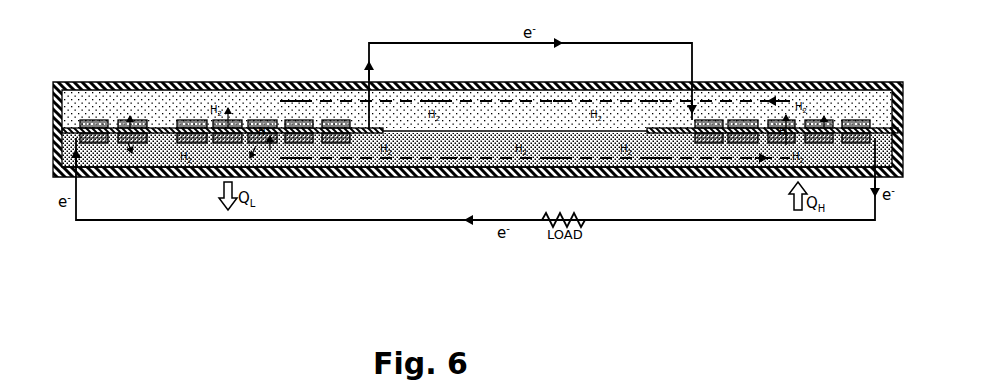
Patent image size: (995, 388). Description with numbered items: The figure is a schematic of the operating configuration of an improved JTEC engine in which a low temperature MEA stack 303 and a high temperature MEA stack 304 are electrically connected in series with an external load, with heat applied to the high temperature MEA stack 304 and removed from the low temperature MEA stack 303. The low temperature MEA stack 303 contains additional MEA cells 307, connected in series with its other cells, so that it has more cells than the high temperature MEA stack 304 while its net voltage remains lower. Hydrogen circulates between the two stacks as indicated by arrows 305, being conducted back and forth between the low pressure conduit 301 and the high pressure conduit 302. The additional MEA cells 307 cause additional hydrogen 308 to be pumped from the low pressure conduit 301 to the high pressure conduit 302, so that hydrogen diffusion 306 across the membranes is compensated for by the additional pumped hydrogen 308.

The low pressure conduit 301 is at (325, 83).
The high pressure conduit 302 is at (700, 168).
The low temperature MEA stack 303 is at (197, 122).
The high temperature MEA stack 304 is at (860, 123).
The arrows indicating hydrogen circulation 305 is at (503, 102).
The hydrogen diffusion 306 is at (824, 118).
The additional MEA cells 307 is at (88, 104).
The additional pumped hydrogen 308 is at (131, 103).